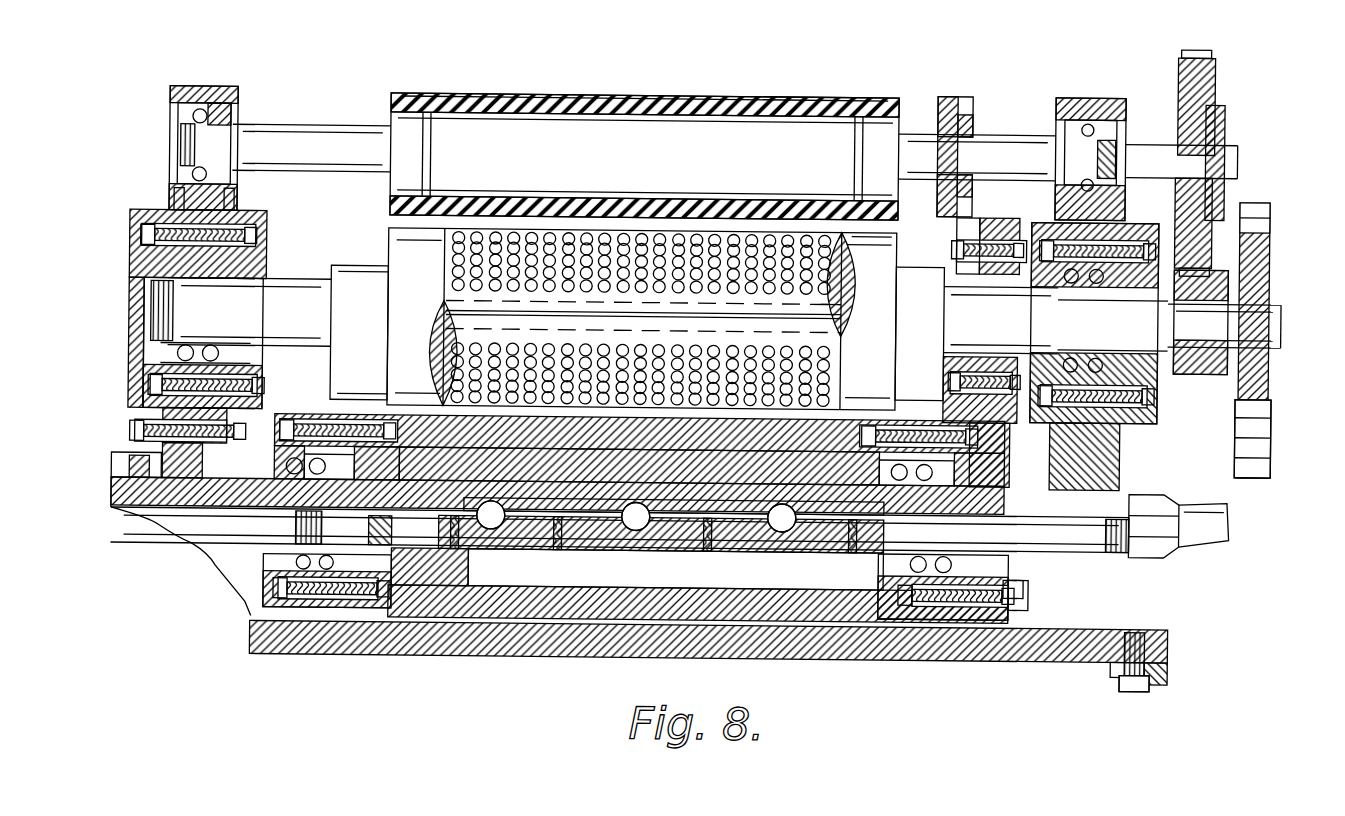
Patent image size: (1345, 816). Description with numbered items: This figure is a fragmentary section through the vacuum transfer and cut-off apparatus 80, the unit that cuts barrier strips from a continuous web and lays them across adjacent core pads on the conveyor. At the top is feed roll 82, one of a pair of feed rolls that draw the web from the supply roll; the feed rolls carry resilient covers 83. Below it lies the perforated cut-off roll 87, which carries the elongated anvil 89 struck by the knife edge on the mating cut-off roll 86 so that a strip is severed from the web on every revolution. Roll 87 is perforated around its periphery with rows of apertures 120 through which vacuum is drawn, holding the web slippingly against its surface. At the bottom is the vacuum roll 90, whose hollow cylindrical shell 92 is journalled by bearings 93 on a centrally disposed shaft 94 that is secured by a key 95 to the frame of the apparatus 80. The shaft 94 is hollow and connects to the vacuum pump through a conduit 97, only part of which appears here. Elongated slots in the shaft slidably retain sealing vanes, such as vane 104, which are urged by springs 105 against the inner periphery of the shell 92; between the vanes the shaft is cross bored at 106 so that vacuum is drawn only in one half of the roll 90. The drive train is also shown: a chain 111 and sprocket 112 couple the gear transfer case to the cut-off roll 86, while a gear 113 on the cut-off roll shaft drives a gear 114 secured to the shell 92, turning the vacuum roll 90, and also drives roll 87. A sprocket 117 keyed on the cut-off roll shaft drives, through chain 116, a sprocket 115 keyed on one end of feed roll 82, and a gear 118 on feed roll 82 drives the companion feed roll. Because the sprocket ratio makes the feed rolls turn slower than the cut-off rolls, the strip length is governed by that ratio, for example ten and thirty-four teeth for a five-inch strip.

The vacuum transfer and cut-off apparatus 80 is at (1282, 177).
The feed roll 82 is at (738, 93).
The resilient cover 83 is at (462, 90).
The cut-off roll 86 is at (388, 240).
The cut-off roll 87 is at (872, 231).
The elongated anvil 89 is at (452, 312).
The vacuum roll 90 is at (865, 625).
The hollow cylindrical shell 92 is at (525, 624).
The bearings 93 is at (290, 565).
The shaft 94 is at (1092, 543).
The key 95 is at (130, 470).
The conduit 97 is at (1228, 527).
The sealing vane 104 is at (790, 581).
The springs 105 is at (535, 544).
The cross bore 106 is at (640, 525).
The chain 111 is at (1270, 431).
The sprocket 112 is at (1270, 366).
The gear 113 is at (1002, 214).
The gear 114 is at (1012, 593).
The sprocket 115 is at (1215, 87).
The chain 116 is at (1190, 49).
The sprocket 117 is at (1195, 370).
The gear 118 is at (955, 92).
The apertures 120 is at (825, 295).